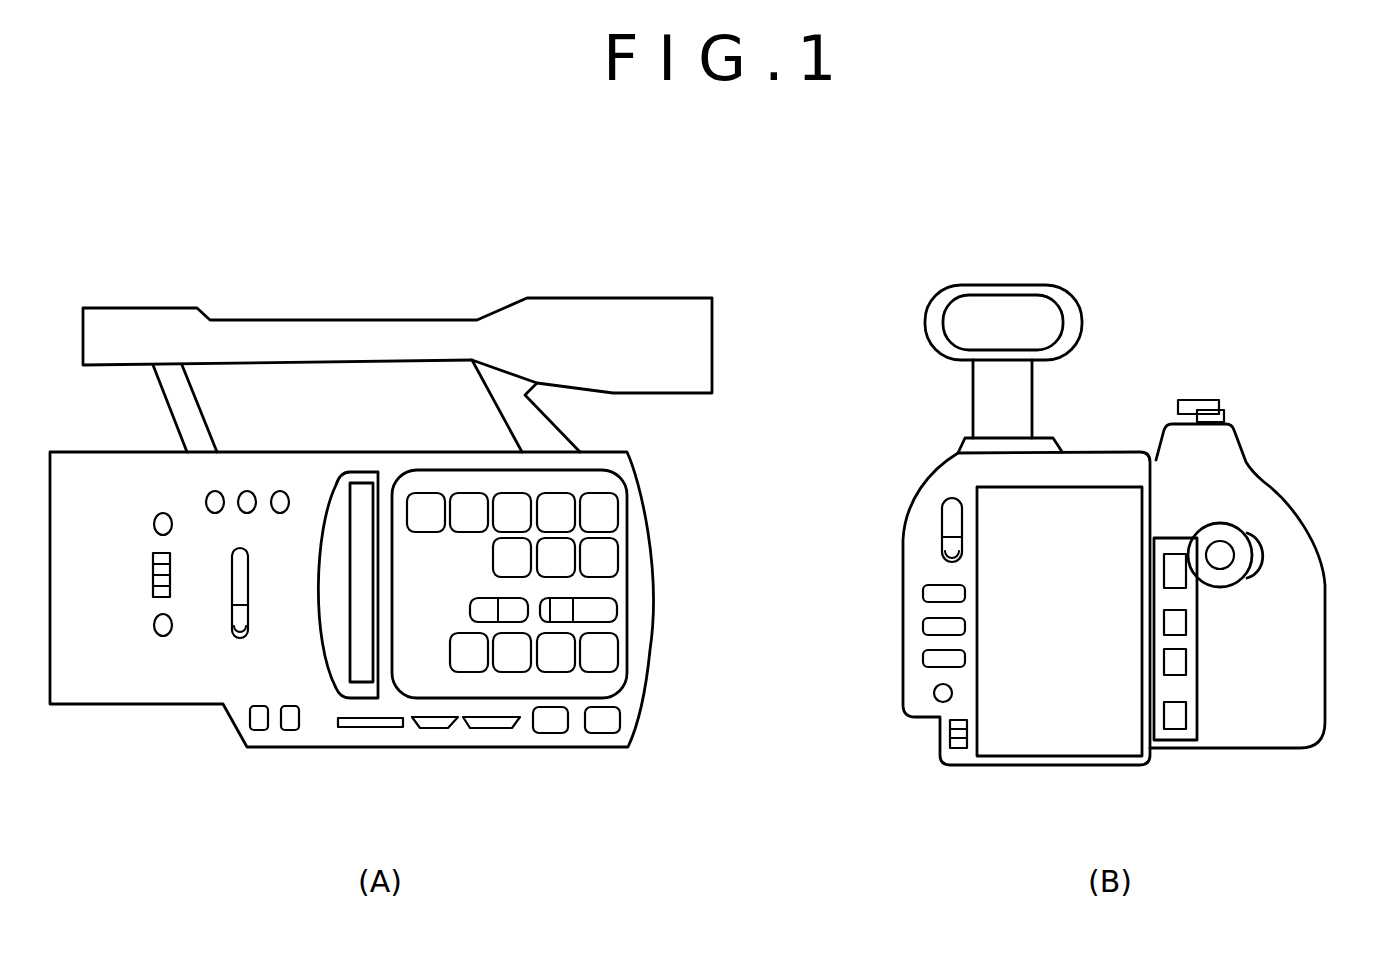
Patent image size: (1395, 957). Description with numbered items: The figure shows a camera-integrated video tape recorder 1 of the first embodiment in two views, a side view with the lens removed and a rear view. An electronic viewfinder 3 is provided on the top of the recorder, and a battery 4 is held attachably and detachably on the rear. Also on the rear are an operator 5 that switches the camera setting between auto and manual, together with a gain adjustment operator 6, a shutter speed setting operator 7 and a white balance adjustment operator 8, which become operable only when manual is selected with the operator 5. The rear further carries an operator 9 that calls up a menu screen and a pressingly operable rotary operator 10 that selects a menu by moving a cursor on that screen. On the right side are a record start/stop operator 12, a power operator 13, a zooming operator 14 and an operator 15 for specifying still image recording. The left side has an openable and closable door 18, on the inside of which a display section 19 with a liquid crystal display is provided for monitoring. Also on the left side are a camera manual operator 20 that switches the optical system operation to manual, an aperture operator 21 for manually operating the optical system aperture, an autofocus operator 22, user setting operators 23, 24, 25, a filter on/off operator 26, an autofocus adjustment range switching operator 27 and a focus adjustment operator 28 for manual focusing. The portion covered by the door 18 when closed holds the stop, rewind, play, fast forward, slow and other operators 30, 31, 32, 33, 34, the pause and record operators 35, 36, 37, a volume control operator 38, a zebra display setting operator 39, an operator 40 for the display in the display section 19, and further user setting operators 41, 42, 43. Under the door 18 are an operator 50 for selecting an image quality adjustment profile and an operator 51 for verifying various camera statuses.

The camera-integrated video tape recorder 1 is at (130, 692).
The electronic viewfinder 3 is at (643, 306).
The battery 4 is at (1068, 510).
The operator 5 is at (940, 530).
The gain adjustment operator 6 is at (925, 595).
The shutter speed setting operator 7 is at (925, 628).
The white balance adjustment operator 8 is at (925, 660).
The operator 9 is at (934, 695).
The rotary operator 10 is at (950, 735).
The record start/stop operator 12 is at (1229, 547).
The power operator 13 is at (1261, 553).
The zooming operator 14 is at (1190, 402).
The operator 15 is at (1220, 412).
The door 18 is at (358, 478).
The display section 19 is at (391, 471).
The camera manual operator 20 is at (156, 524).
The aperture operator 21 is at (153, 575).
The autofocus operator 22 is at (156, 625).
The user setting operator 23 is at (218, 492).
The user setting operator 24 is at (248, 492).
The user setting operator 25 is at (282, 492).
The filter on/off operator 26 is at (238, 638).
The autofocus adjustment range switching operator 27 is at (260, 722).
The focus adjustment operator 28 is at (292, 722).
The operator 30 is at (592, 478).
The operator 31 is at (469, 512).
The operator 32 is at (512, 512).
The operator 33 is at (556, 512).
The operator 34 is at (599, 512).
The pause and record operator 35 is at (625, 524).
The pause and record operator 36 is at (556, 557).
The pause and record operator 37 is at (599, 557).
The volume control operator 38 is at (518, 617).
The zebra display setting operator 39 is at (605, 609).
The operator 40 is at (472, 662).
The user setting operator 41 is at (618, 684).
The user setting operator 42 is at (556, 652).
The user setting operator 43 is at (599, 652).
The operator 50 is at (547, 725).
The operator 51 is at (600, 725).